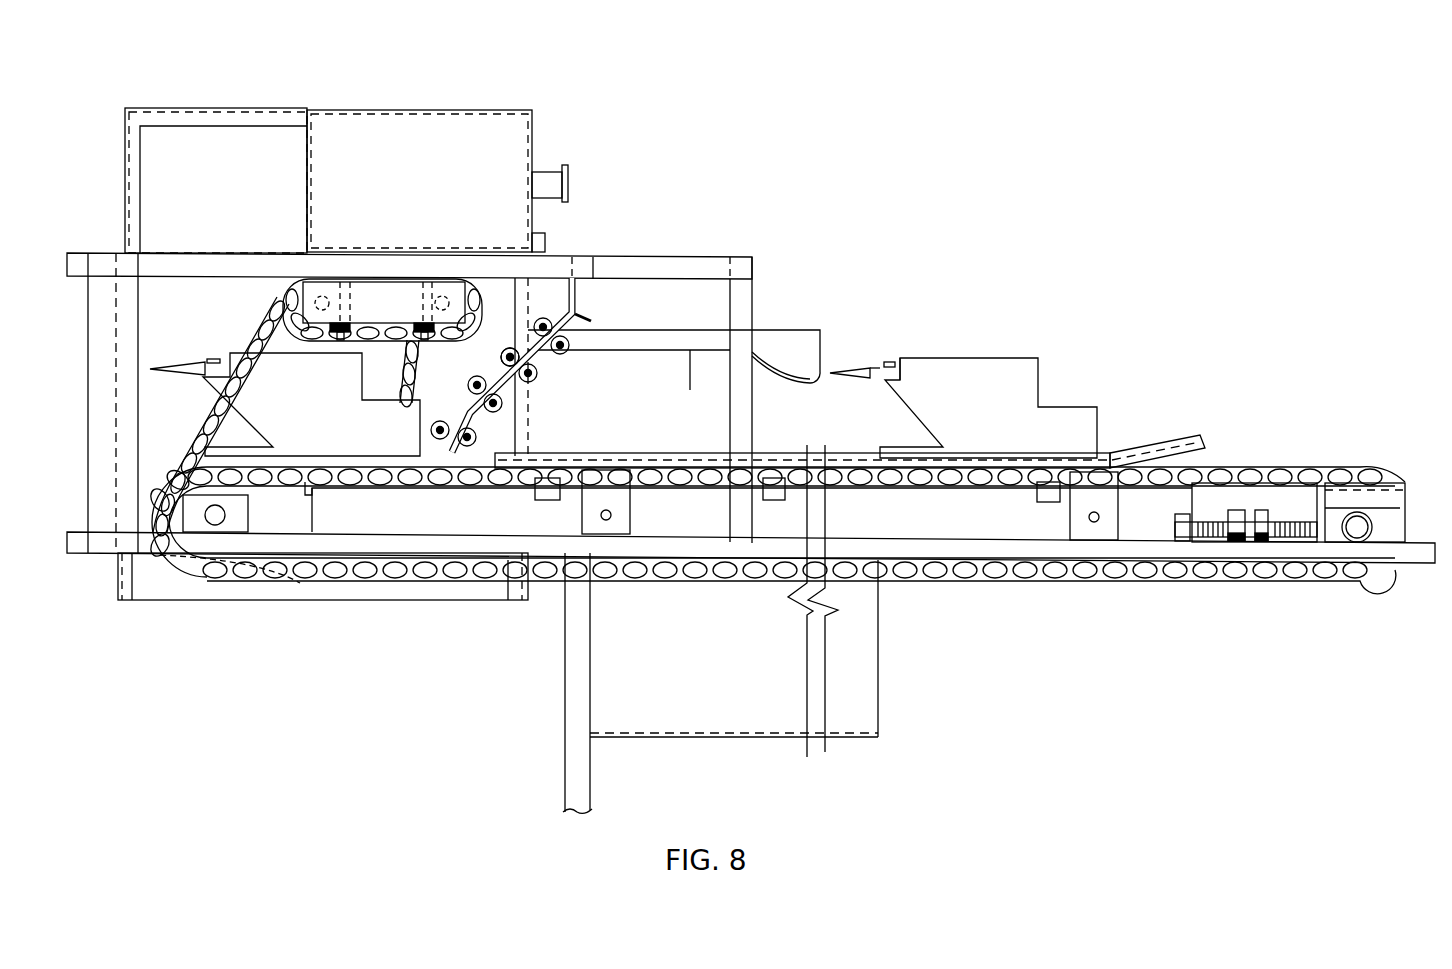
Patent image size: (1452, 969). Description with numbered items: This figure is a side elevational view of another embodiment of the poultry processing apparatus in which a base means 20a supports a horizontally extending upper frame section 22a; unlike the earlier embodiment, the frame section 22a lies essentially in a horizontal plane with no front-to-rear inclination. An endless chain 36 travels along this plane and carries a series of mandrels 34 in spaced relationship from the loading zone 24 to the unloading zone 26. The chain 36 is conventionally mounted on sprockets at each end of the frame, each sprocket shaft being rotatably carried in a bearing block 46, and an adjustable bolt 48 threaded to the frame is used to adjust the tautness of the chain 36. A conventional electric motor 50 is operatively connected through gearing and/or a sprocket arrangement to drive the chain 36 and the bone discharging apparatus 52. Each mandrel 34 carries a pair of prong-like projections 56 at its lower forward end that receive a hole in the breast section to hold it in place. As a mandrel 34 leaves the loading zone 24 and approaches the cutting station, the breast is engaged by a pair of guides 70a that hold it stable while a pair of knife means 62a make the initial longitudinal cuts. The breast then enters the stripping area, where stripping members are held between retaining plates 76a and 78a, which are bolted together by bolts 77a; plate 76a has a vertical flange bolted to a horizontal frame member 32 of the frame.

The base means 20a is at (550, 737).
The upper frame section 22a is at (724, 238).
The loading zone 24 is at (1237, 416).
The unloading zone 26 is at (250, 318).
The horizontal frame member 32 is at (593, 273).
The mandrel 34 is at (985, 357).
The endless chain 36 is at (1000, 575).
The bearing block 46 is at (1392, 525).
The adjustable bolt 48 is at (1287, 540).
The electric motor 50 is at (420, 92).
The bone discharging apparatus 52 is at (495, 303).
The prong-like projections 56 is at (850, 370).
The knife means 62a is at (690, 358).
The guides 70a is at (795, 330).
The retaining plate 76a is at (505, 378).
The bolts 77a is at (440, 440).
The retaining plate 78a is at (545, 355).